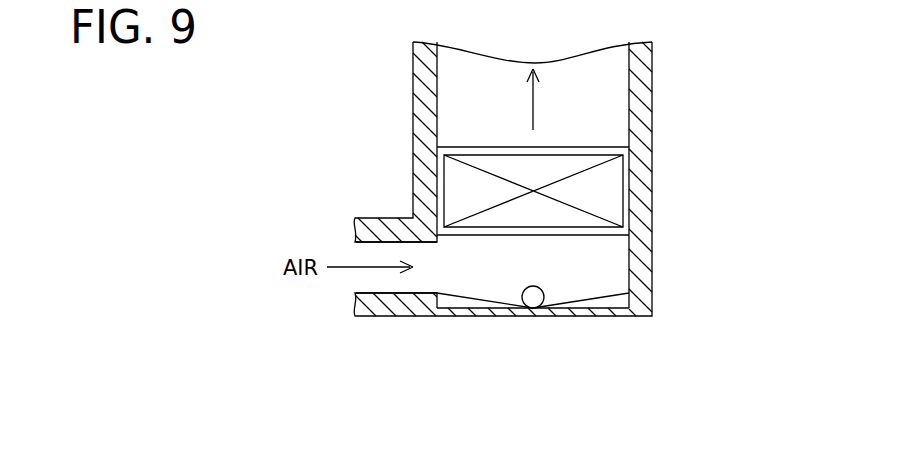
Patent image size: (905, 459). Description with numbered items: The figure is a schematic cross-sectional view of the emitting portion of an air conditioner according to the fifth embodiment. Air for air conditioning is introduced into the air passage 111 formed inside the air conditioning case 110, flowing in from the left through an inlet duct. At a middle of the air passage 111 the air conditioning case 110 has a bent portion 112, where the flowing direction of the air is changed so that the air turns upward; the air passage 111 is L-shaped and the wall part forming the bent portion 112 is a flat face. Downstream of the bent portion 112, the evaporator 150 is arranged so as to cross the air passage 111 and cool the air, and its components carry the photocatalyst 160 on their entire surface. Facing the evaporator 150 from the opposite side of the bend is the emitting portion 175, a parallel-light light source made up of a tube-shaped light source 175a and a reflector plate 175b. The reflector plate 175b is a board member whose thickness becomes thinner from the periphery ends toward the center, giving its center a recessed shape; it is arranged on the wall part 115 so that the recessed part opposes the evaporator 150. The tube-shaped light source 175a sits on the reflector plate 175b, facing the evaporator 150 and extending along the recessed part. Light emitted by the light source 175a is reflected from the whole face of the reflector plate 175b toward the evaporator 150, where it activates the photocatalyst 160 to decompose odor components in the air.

The air conditioning case 110 is at (388, 317).
The air passage 111 is at (459, 263).
The bent portion 112 is at (582, 317).
The wall part 115 is at (535, 316).
The evaporator 150 is at (609, 180).
The photocatalyst 160 is at (625, 200).
The emitting portion 175 is at (668, 287).
The tube-shaped light source 175a is at (536, 292).
The reflector plate 175b is at (612, 300).